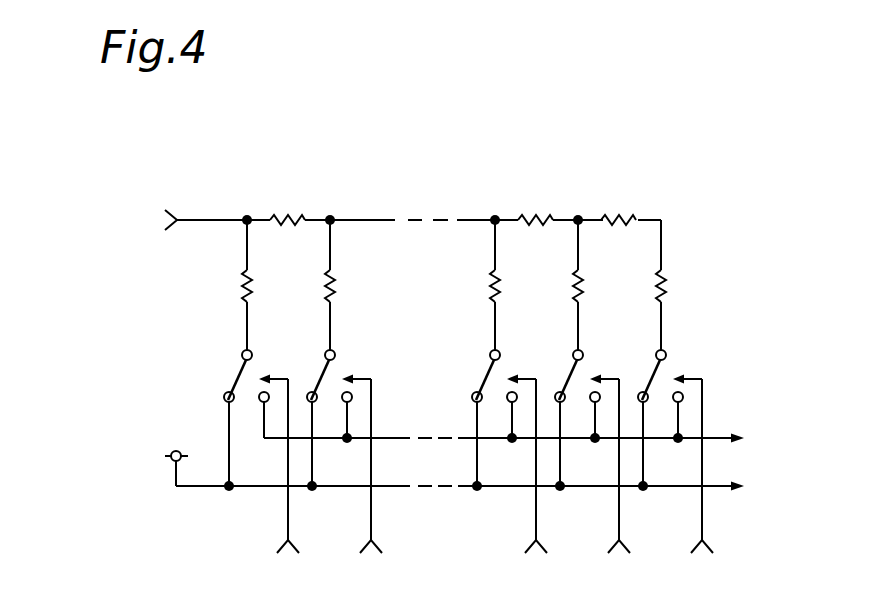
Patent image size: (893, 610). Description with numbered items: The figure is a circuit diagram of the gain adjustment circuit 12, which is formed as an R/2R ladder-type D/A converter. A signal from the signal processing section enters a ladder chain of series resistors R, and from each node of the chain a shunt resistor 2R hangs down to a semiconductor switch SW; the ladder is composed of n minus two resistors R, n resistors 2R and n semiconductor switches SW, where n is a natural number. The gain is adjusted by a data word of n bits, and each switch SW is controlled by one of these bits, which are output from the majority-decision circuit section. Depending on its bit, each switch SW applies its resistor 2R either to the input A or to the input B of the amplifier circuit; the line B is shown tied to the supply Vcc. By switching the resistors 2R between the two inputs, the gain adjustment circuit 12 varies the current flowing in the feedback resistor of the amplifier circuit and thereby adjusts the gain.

The gain adjustment circuit 12 is at (676, 190).
The resistor R is at (293, 213).
The resistor 2R is at (251, 283).
The semiconductor switch SW is at (240, 387).
The supply voltage terminal Vcc is at (177, 454).